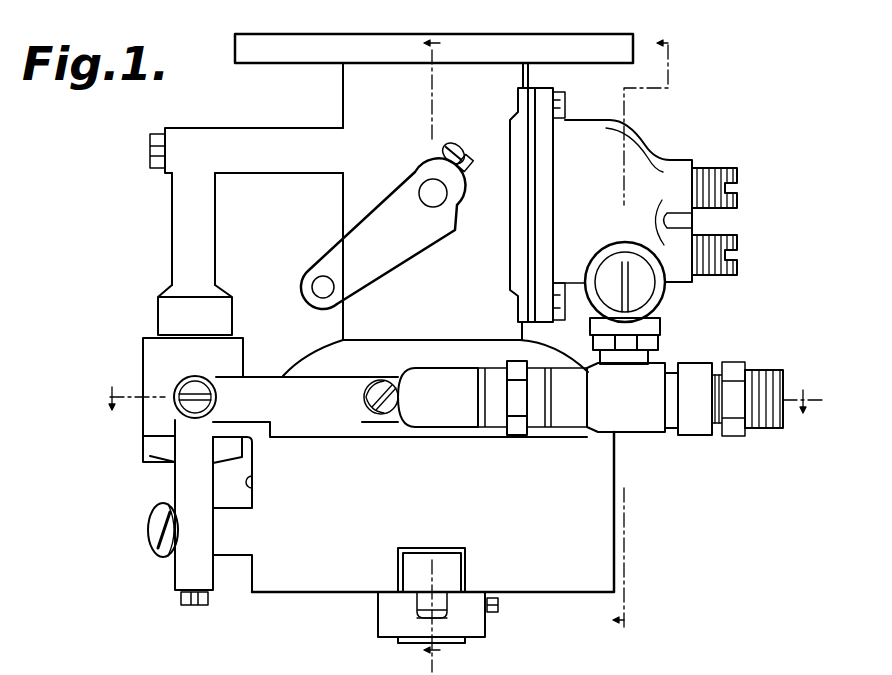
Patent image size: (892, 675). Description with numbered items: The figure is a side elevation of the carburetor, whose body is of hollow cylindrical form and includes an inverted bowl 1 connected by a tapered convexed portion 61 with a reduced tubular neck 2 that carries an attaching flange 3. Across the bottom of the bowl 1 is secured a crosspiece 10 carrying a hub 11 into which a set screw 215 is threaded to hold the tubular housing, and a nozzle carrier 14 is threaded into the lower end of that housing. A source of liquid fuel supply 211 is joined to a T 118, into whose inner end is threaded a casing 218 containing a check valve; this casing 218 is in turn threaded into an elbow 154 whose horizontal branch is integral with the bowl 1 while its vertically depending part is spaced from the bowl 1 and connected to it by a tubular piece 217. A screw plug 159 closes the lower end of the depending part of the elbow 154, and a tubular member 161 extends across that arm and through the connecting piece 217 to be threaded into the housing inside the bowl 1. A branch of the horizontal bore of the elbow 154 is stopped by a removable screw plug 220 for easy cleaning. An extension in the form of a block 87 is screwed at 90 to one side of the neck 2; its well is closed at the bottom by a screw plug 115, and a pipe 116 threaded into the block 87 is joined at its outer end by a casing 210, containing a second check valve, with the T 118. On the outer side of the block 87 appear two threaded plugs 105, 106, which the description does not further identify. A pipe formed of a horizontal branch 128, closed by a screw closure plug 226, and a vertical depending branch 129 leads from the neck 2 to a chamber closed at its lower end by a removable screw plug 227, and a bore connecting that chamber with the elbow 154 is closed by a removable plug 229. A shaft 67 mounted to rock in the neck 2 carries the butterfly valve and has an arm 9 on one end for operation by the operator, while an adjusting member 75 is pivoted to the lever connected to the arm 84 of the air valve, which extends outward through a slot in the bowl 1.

The inverted bowl 1 is at (598, 558).
The reduced tubular neck 2 is at (360, 93).
The attaching flange 3 is at (246, 46).
The arm 9 is at (388, 245).
The crosspiece 10 is at (442, 590).
The hub 11 is at (473, 630).
The nozzle carrier 14 is at (395, 642).
The tapered convexed portion 61 is at (318, 358).
The shaft 67 is at (433, 193).
The adjusting member 75 is at (471, 646).
The arm 84 is at (386, 659).
The block 87 is at (632, 146).
The screw attachment 90 is at (570, 290).
The threaded plug 105 is at (718, 170).
The threaded plug 106 is at (735, 240).
The screw plug 115 is at (663, 333).
The pipe 116 is at (664, 286).
The T 118 is at (641, 432).
The horizontal branch 128 is at (244, 142).
The vertical depending branch 129 is at (184, 241).
The elbow 154 is at (306, 423).
The screw plug 159 is at (178, 606).
The tubular member 161 is at (150, 518).
The casing 210 is at (662, 348).
The source of liquid fuel supply 211 is at (762, 430).
The set screw 215 is at (498, 605).
The tubular piece 217 is at (230, 545).
The casing 218 is at (498, 422).
The screw plug 220 is at (387, 385).
The screw closure plug 226 is at (150, 160).
The screw plug 227 is at (148, 450).
The plug 229 is at (190, 390).